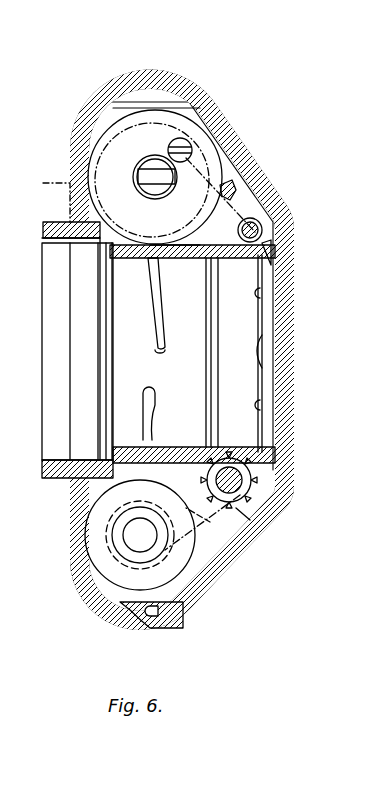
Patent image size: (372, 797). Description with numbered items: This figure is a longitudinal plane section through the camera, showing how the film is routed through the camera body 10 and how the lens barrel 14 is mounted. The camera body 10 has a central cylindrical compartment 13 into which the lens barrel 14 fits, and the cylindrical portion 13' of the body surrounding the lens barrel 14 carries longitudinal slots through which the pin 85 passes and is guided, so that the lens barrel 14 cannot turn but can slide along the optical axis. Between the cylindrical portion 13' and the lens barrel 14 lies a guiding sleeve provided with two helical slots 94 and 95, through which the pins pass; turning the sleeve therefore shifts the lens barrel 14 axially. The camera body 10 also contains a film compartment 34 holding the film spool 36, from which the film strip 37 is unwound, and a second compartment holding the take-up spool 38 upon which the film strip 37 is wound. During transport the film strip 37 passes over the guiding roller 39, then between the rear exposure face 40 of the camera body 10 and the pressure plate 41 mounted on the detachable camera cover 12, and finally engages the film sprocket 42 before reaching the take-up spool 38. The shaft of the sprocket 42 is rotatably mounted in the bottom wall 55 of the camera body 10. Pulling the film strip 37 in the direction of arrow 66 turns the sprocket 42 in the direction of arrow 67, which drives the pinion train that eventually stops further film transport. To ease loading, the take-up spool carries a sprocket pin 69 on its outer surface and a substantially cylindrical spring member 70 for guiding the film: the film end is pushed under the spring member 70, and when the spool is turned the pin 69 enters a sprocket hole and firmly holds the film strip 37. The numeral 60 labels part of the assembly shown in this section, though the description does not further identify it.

The tape cartridge assembly 60 is at (136, 261).
The camera cover 12 is at (210, 98).
The film compartment 34 is at (113, 113).
The film spool 36 is at (110, 147).
The film strip 37 is at (246, 190).
The camera body 10 is at (82, 212).
The guiding roller 39 is at (268, 226).
The cylindrical portion 13' is at (175, 228).
The rear exposure face 40 is at (268, 255).
The central cylindrical compartment 13 is at (294, 353).
The helical slot 94 is at (155, 273).
The pin 85 is at (165, 350).
The lens barrel 14 is at (128, 311).
The pressure plate 41 is at (262, 368).
The helical slot 95 is at (150, 406).
The arrow 67 is at (250, 493).
The film sprocket 42 is at (241, 498).
The arrow 66 is at (236, 517).
The sprocket pin 69 is at (210, 522).
The spring member 70 is at (105, 530).
The take-up spool 38 is at (93, 556).
The bottom wall 55 is at (112, 592).